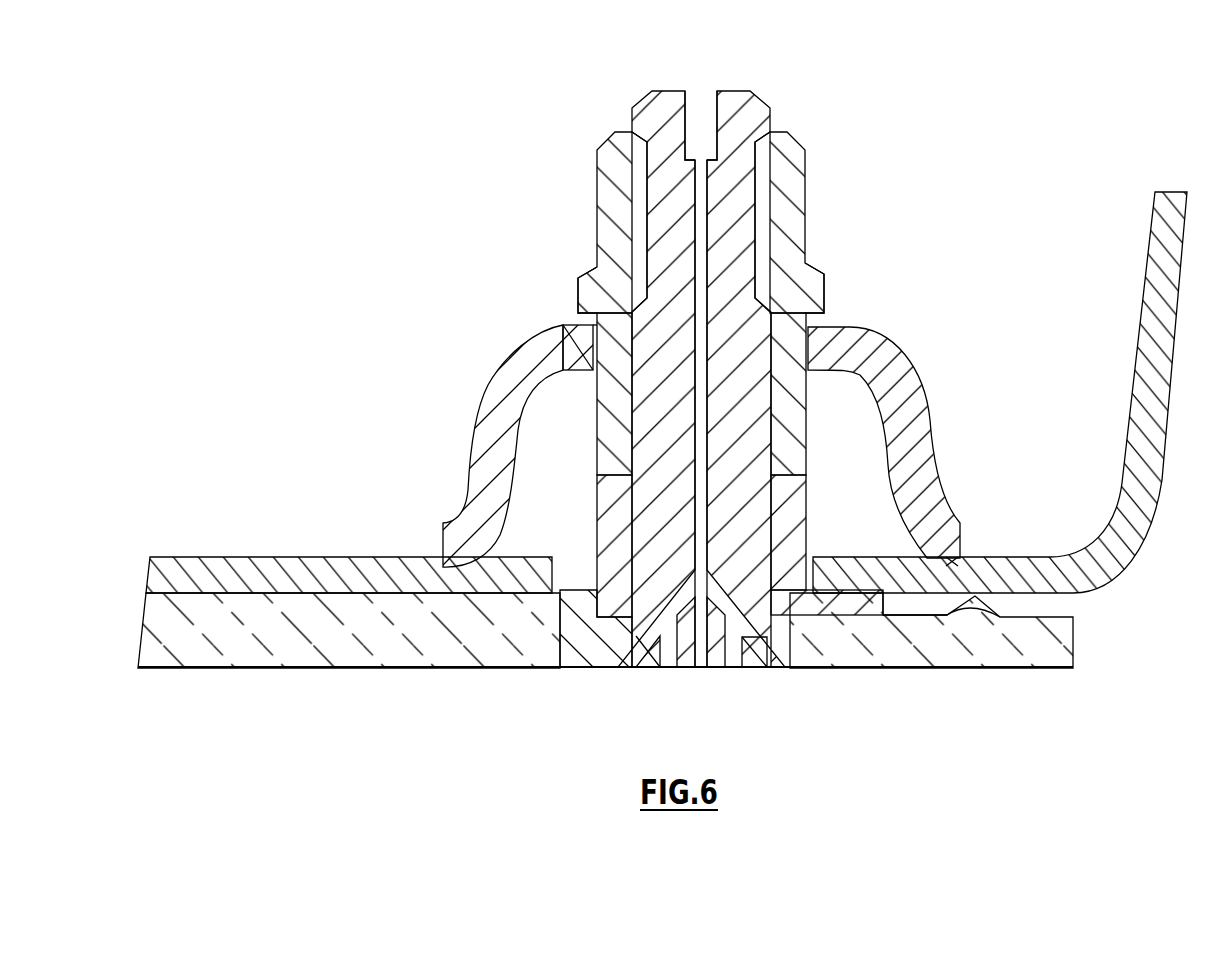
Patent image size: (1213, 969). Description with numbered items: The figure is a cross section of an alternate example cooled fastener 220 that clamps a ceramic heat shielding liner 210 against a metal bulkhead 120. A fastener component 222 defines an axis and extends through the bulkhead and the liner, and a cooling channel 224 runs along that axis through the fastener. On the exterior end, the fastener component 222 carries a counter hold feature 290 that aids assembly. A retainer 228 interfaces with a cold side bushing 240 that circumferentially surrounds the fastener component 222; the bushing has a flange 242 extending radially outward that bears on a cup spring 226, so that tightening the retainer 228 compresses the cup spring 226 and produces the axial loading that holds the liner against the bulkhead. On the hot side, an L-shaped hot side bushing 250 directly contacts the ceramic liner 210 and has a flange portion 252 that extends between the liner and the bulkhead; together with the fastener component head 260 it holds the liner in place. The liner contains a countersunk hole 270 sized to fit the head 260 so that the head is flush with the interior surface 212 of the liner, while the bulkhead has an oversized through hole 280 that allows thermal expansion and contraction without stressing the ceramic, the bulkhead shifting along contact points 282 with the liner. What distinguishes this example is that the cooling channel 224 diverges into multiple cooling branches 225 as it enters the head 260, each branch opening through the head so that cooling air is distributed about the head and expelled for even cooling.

The metal bulkhead 120 is at (1087, 580).
The ceramic heat shielding liner 210 is at (873, 668).
The interior surface 212 is at (352, 668).
The cooled fastener 220 is at (860, 80).
The fastener component 222 is at (750, 455).
The cooling channel 224 is at (700, 222).
The cooling branches 225 is at (737, 655).
The cup spring 226 is at (935, 455).
The retainer 228 is at (793, 182).
The cold side bushing 240 is at (575, 333).
The flange 242 is at (578, 292).
The hot side bushing 250 is at (572, 512).
The flange portion 252 is at (570, 605).
The fastener component head 260 is at (790, 668).
The hole 270 is at (640, 637).
The through hole 280 is at (575, 572).
The contact points 282 is at (213, 593).
The counter hold feature 290 is at (690, 128).